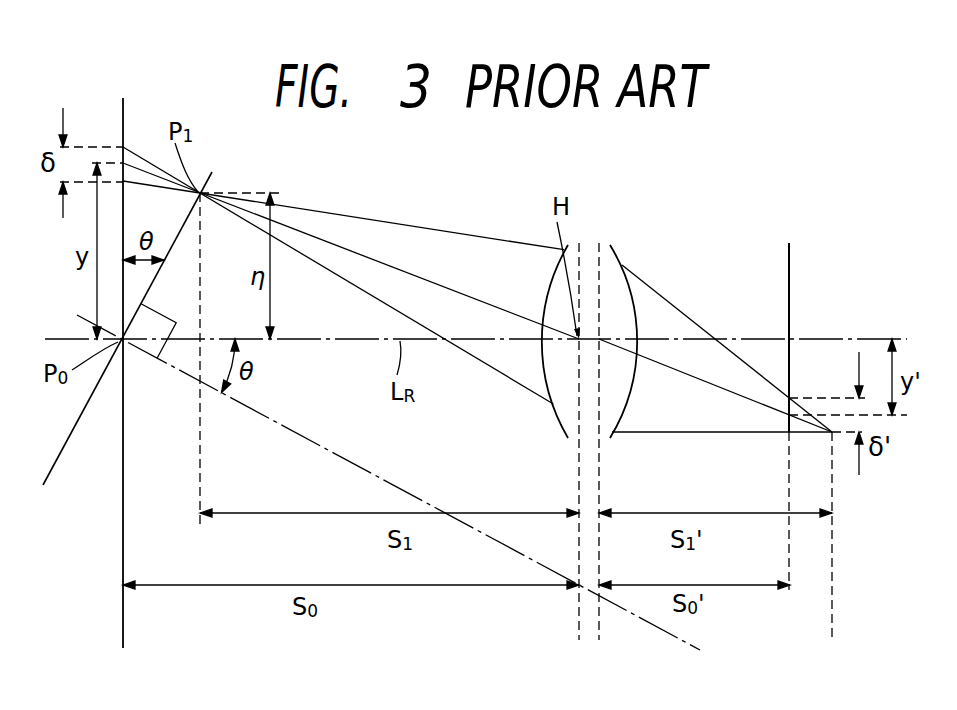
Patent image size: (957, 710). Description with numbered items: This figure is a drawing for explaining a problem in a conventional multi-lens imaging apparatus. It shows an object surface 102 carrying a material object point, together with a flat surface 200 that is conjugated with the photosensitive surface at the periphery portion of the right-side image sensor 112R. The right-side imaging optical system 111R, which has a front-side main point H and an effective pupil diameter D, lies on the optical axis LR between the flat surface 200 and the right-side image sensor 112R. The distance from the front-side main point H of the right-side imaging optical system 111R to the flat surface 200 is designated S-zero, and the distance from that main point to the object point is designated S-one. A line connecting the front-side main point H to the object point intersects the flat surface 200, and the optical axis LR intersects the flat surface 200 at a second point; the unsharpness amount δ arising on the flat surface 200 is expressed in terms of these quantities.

The flat surface 200 is at (122, 118).
The object surface 102 is at (211, 178).
The right-side imaging optical system 111R is at (618, 258).
The right-side image sensor 112R is at (789, 268).